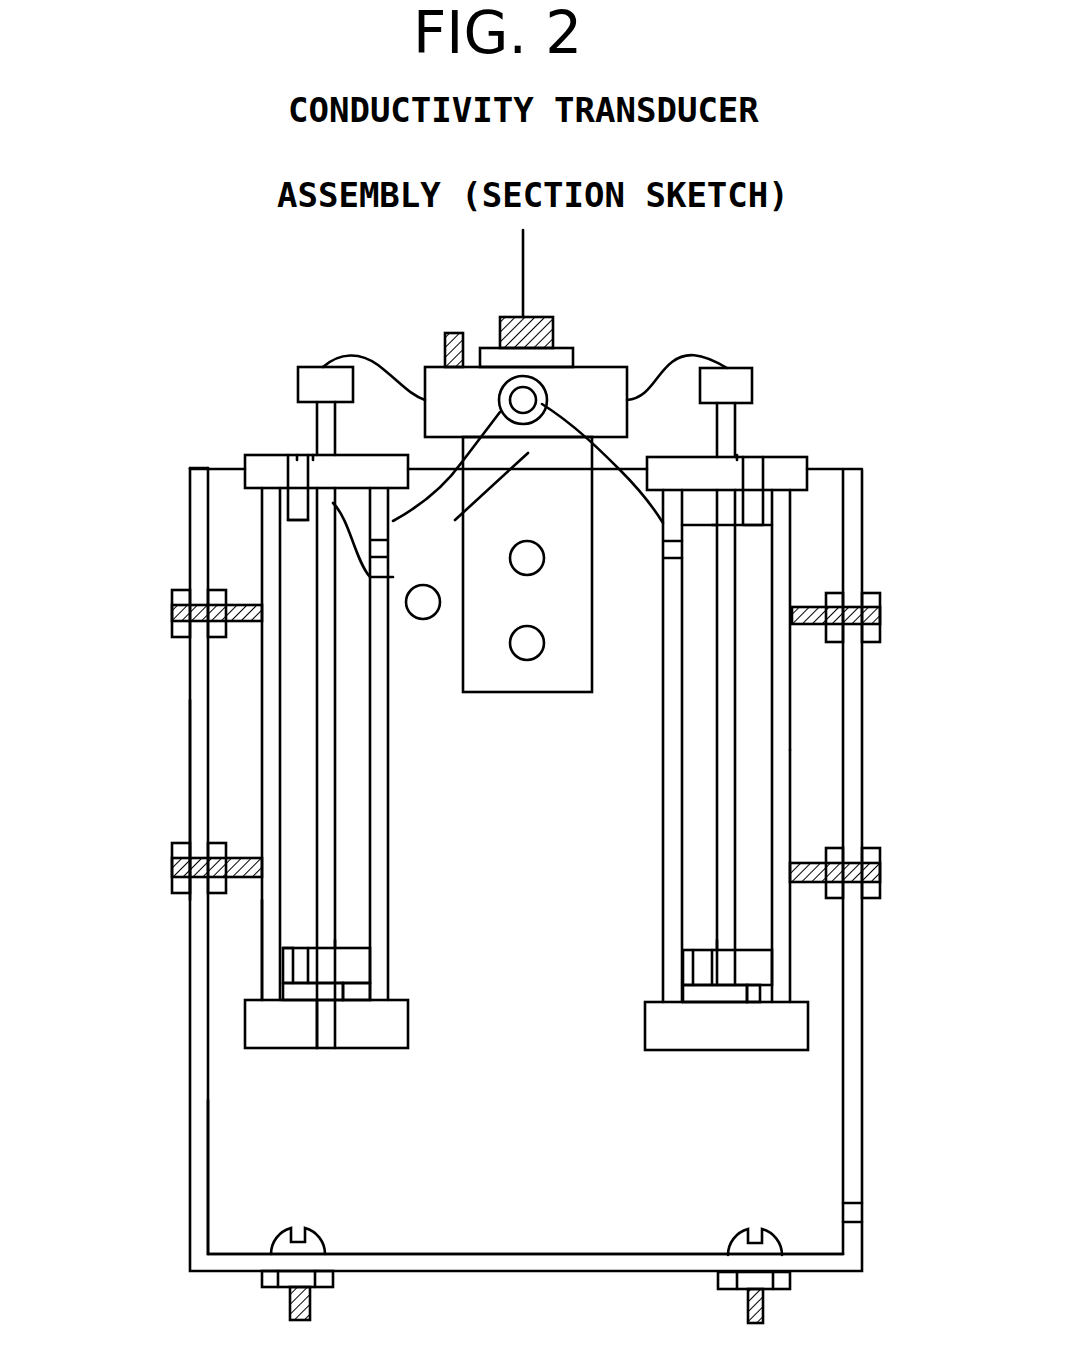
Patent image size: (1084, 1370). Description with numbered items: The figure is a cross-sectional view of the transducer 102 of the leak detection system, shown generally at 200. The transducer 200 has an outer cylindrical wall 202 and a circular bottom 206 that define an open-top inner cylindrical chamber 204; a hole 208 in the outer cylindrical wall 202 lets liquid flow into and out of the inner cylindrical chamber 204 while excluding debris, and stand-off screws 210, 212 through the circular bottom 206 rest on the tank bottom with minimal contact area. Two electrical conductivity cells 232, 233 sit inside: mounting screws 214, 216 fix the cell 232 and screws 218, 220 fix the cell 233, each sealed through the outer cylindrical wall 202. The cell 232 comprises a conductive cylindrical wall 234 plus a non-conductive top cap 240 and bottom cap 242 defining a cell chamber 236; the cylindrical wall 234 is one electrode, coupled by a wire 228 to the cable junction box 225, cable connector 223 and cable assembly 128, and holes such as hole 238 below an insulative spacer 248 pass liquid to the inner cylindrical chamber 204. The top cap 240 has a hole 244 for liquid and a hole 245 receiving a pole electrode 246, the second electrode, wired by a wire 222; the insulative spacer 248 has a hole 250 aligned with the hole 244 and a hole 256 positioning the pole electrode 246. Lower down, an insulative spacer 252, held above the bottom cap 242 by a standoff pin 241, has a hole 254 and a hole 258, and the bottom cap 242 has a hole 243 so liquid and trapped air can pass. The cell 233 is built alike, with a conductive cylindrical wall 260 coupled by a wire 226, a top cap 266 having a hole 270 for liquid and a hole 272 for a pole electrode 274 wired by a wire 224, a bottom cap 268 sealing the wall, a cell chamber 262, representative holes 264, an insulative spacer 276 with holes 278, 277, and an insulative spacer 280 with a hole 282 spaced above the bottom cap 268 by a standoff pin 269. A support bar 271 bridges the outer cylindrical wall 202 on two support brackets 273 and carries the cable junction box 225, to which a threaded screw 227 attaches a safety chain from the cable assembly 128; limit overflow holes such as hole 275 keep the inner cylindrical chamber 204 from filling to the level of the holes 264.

The transducer 102 is at (188, 1175).
The cable assembly 128 is at (523, 248).
The transducer 200 is at (146, 437).
The outer cylindrical wall 202 is at (187, 1008).
The inner cylindrical chamber 204 is at (275, 1105).
The circular bottom 206 is at (500, 1272).
The hole 208 is at (862, 1213).
The stand-off screw 210 is at (310, 1317).
The stand-off screw 212 is at (763, 1312).
The mounting screw 214 is at (172, 607).
The mounting screw 216 is at (182, 843).
The screw 218 is at (875, 606).
The screw 220 is at (870, 860).
The wire 222 is at (380, 333).
The cable connector 223 is at (572, 312).
The wire 224 is at (690, 352).
The cable junction box 225 is at (592, 367).
The wire 226 is at (622, 458).
The threaded screw 227 is at (441, 347).
The wire 228 is at (447, 460).
The electrical conductivity cell 232 is at (260, 687).
The electrical conductivity cell 233 is at (790, 752).
The cylindrical wall 234 is at (257, 932).
The cell chamber 236 is at (293, 650).
The hole 238 is at (388, 548).
The top cap 240 is at (265, 455).
The standoff pin 241 is at (352, 993).
The bottom cap 242 is at (408, 1027).
The hole 243 is at (328, 1040).
The hole 244 is at (297, 455).
The hole 245 is at (313, 455).
The pole electrode 246 is at (317, 713).
The insulative spacer 248 is at (285, 502).
The hole 250 is at (298, 520).
The insulative spacer 252 is at (355, 947).
The hole 254 is at (295, 947).
The hole 256 is at (392, 549).
The hole 258 is at (337, 947).
The cylindrical wall 260 is at (791, 820).
The cell chamber 262 is at (762, 700).
The hole 264 is at (663, 548).
The top cap 266 is at (812, 458).
The bottom cap 268 is at (808, 1030).
The standoff pin 269 is at (760, 993).
The hole 270 is at (752, 460).
The support bar 271 is at (470, 498).
The hole 272 is at (737, 455).
The support bracket 273 is at (518, 690).
The pole electrode 274 is at (760, 795).
The hole 275 is at (423, 619).
The insulative spacer 276 is at (693, 510).
The hole 277 is at (712, 527).
The hole 278 is at (752, 525).
The insulative spacer 280 is at (750, 973).
The hole 282 is at (717, 947).